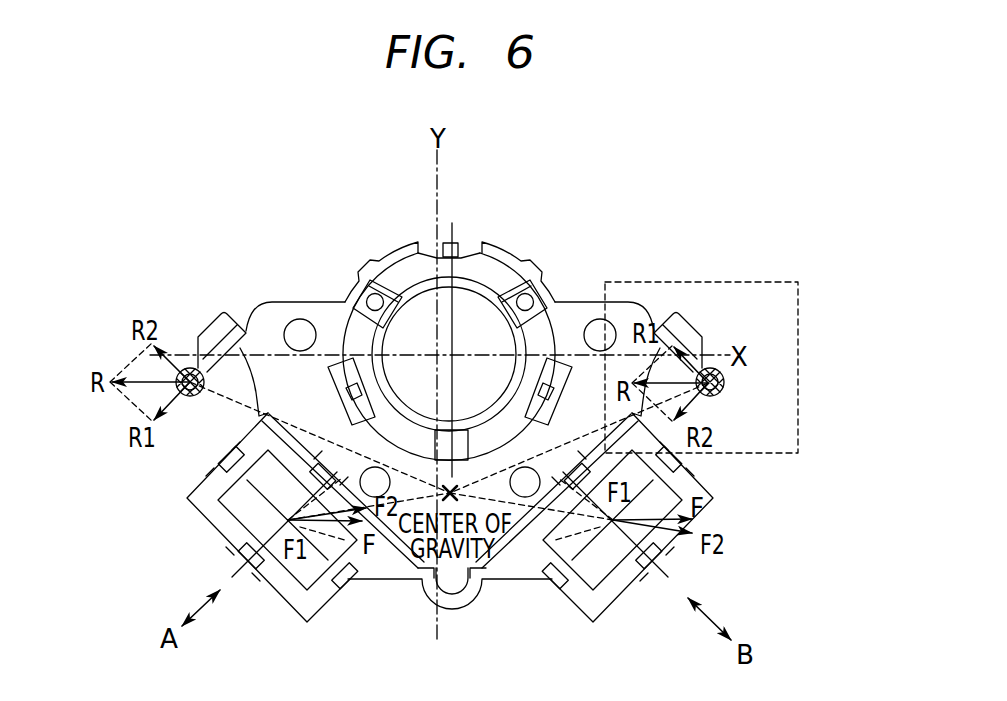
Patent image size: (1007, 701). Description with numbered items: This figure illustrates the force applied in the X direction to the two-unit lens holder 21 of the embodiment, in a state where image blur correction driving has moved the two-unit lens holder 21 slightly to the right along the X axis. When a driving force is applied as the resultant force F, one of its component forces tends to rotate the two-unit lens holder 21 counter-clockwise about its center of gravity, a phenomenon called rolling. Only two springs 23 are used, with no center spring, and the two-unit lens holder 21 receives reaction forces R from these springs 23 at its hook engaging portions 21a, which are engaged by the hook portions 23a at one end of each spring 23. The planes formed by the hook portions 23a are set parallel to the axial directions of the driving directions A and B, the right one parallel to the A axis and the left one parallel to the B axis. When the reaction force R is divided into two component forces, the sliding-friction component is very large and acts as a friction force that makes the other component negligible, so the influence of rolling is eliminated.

The two-unit lens holder 21 is at (332, 320).
The hook engaging portion 21a is at (189, 397).
The spring 23 is at (187, 369).
The hook portion 23a is at (200, 394).